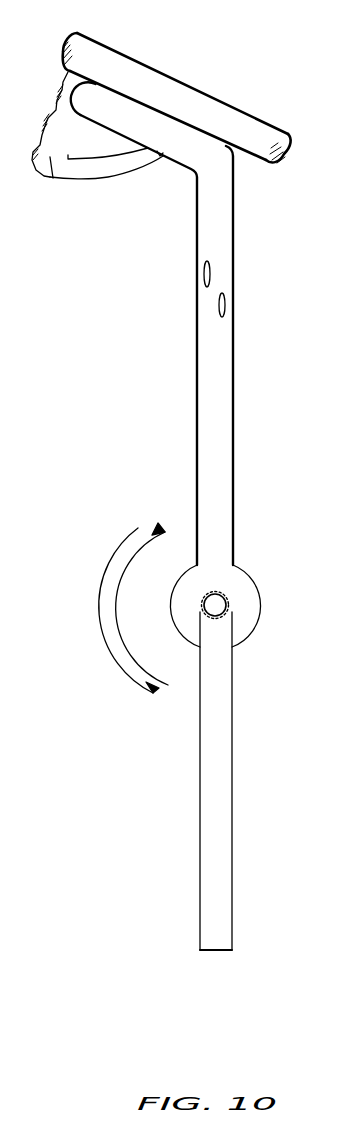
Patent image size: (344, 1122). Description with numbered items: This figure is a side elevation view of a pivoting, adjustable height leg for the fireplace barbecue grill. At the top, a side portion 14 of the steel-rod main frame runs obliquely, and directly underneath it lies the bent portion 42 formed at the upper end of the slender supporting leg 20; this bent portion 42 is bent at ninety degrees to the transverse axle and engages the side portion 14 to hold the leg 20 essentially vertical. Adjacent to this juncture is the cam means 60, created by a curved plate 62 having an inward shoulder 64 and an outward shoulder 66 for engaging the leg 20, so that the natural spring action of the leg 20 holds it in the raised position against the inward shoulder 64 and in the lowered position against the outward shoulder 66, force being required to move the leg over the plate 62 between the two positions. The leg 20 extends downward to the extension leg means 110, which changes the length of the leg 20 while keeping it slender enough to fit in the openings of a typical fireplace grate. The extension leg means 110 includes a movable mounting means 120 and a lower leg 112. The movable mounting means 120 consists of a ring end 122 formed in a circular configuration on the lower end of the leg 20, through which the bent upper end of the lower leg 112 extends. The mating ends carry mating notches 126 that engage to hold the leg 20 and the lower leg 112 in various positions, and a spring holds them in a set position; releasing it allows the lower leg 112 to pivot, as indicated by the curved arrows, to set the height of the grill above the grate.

The side portion 14 is at (183, 97).
The supporting leg 20 is at (203, 372).
The bent portion 42 is at (146, 126).
The cam means 60 is at (123, 173).
The curved plate 62 is at (52, 160).
The inward shoulder 64 is at (68, 182).
The outward shoulder 66 is at (158, 153).
The extension leg means 110 is at (232, 752).
The lower leg 112 is at (227, 868).
The movable mounting means 120 is at (255, 578).
The ring end 122 is at (183, 632).
The mating notches 126 is at (230, 606).